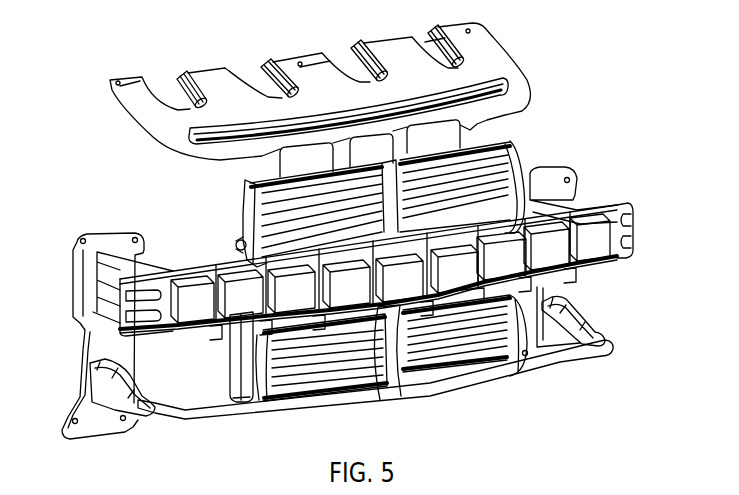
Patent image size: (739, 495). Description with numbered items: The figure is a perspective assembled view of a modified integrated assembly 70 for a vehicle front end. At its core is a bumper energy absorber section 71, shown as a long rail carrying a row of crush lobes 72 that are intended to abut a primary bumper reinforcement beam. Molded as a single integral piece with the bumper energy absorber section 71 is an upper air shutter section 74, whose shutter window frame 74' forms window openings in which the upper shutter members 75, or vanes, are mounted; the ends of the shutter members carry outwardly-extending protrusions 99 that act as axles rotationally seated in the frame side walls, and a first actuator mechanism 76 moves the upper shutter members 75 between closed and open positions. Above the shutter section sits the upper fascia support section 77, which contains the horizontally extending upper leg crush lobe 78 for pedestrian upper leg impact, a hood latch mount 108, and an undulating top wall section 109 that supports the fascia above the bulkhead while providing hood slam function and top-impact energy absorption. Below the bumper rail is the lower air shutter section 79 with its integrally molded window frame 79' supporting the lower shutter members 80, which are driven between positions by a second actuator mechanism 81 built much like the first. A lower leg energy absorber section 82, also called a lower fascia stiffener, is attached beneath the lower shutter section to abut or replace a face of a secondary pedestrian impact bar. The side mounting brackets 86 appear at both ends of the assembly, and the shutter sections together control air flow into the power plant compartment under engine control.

The integrated assembly 70 is at (628, 115).
The bumper energy absorber section 71 is at (630, 228).
The crush lobes 72 is at (592, 258).
The upper air shutter section 74 is at (348, 204).
The shutter window frame 74' is at (212, 205).
The upper shutter members 75 is at (500, 172).
The first actuator mechanism 76 is at (392, 178).
The upper fascia support section 77 is at (528, 43).
The upper leg crush lobe 78 is at (412, 100).
The lower air shutter section 79 is at (228, 357).
The window frame 79' is at (224, 427).
The lower shutter members 80 is at (322, 368).
The second actuator mechanism 81 is at (405, 368).
The lower leg energy absorber section 82 is at (565, 360).
The side mounting bracket 86 is at (70, 280).
The outwardly-extending protrusions 99 is at (502, 335).
The hood latch mount 108 is at (308, 65).
The undulating top wall section 109 is at (248, 76).